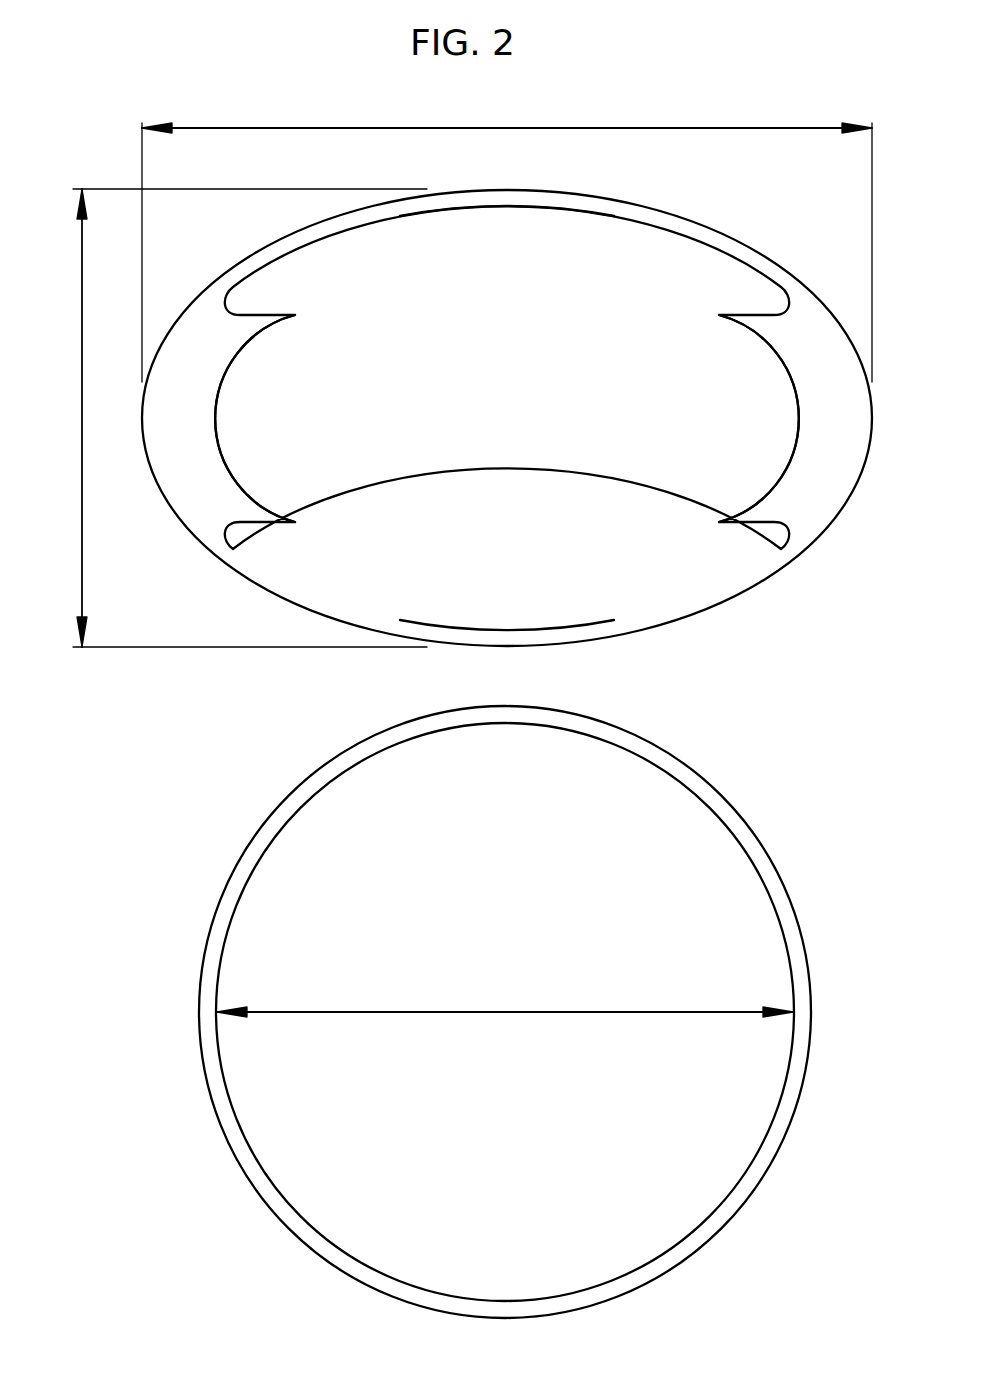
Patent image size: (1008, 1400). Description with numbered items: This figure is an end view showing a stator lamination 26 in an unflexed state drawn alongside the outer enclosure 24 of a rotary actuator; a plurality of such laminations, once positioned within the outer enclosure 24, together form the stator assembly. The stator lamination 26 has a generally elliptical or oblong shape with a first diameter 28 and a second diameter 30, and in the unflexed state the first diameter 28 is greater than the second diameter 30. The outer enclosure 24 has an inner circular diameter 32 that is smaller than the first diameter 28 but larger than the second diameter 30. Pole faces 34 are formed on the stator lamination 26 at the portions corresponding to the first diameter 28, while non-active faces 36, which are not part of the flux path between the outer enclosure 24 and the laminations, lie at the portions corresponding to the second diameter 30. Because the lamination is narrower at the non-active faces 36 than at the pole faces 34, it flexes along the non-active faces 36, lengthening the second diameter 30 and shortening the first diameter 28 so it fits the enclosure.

The outer enclosure 24 is at (722, 792).
The stator lamination 26 is at (310, 612).
The first diameter 28 is at (678, 128).
The second diameter 30 is at (82, 412).
The inner circular diameter 32 is at (532, 1012).
The pole faces 34 is at (219, 438).
The non-active faces 36 is at (513, 207).